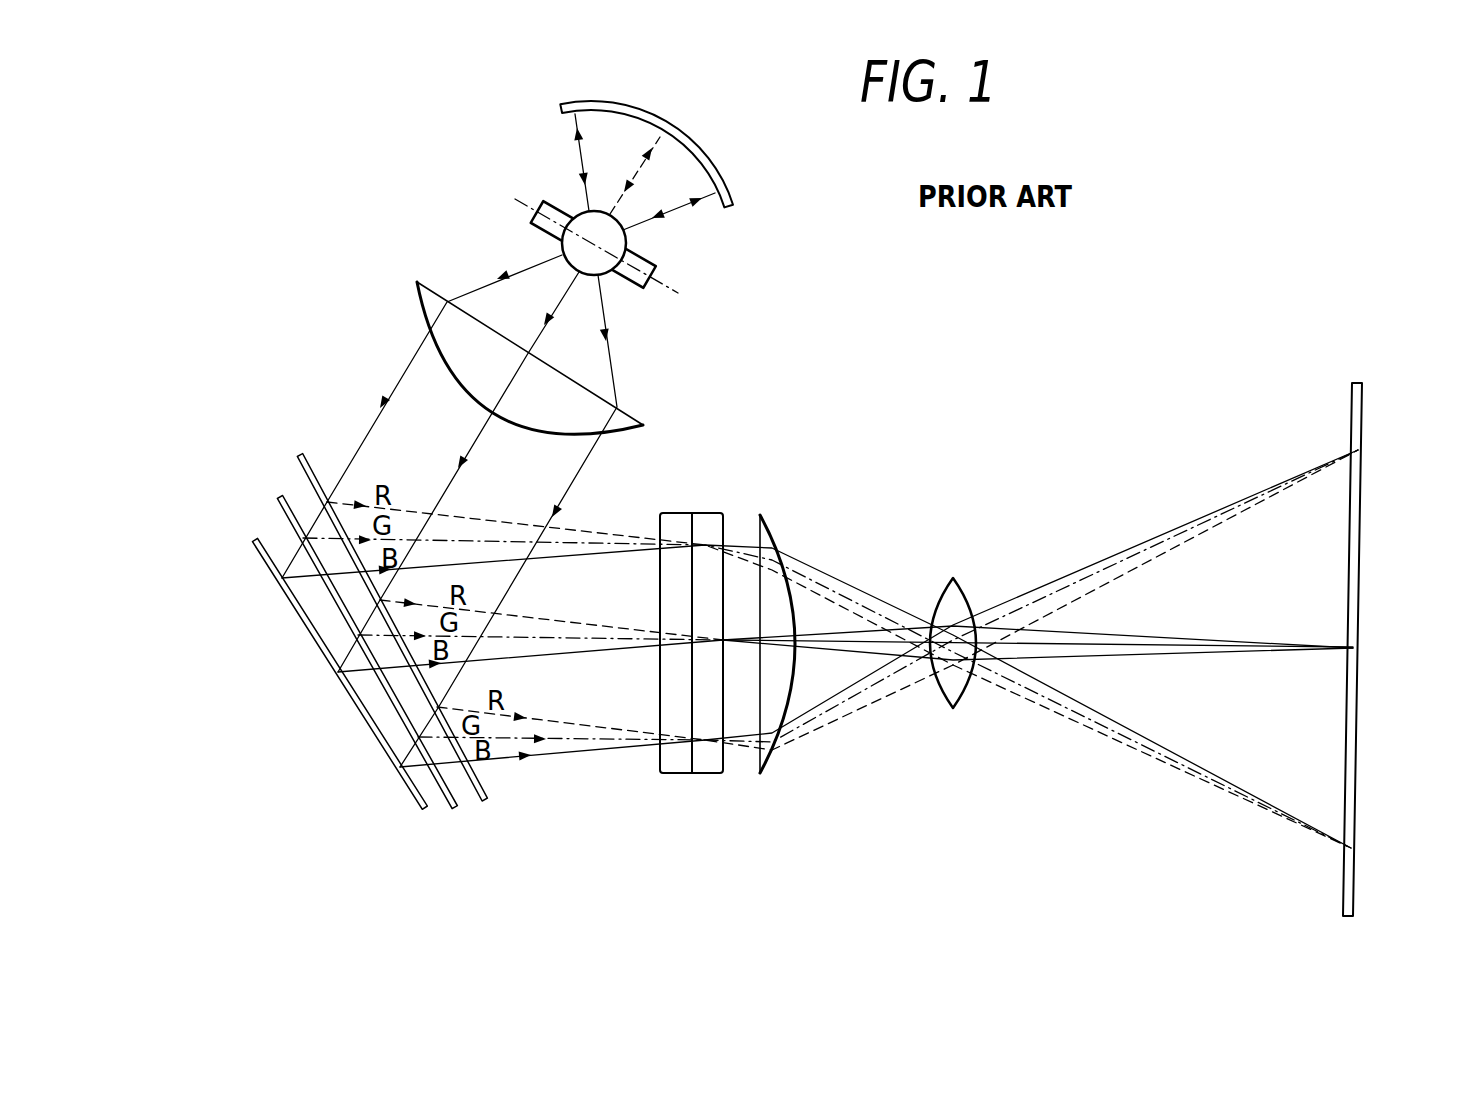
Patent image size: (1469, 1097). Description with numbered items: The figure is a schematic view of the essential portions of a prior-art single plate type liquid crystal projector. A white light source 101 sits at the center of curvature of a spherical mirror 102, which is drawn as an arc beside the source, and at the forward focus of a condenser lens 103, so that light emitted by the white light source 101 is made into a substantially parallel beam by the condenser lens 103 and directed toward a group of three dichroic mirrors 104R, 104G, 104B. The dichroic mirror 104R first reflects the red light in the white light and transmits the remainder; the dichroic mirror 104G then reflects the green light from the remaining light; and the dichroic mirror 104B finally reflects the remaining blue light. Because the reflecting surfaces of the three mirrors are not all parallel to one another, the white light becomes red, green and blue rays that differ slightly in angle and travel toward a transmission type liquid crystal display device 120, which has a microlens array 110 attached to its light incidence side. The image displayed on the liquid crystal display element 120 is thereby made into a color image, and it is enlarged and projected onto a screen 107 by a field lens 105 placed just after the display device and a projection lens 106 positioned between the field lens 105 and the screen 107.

The white light source 101 is at (560, 212).
The spherical mirror 102 is at (628, 103).
The condenser lens 103 is at (417, 283).
The dichroic mirror 104R is at (301, 453).
The dichroic mirror 104G is at (283, 496).
The dichroic mirror 104B is at (258, 539).
The field lens 105 is at (770, 776).
The projection lens 106 is at (948, 710).
The screen 107 is at (1358, 782).
The microlens array 110 is at (668, 776).
The transmission type liquid crystal display device 120 is at (712, 776).